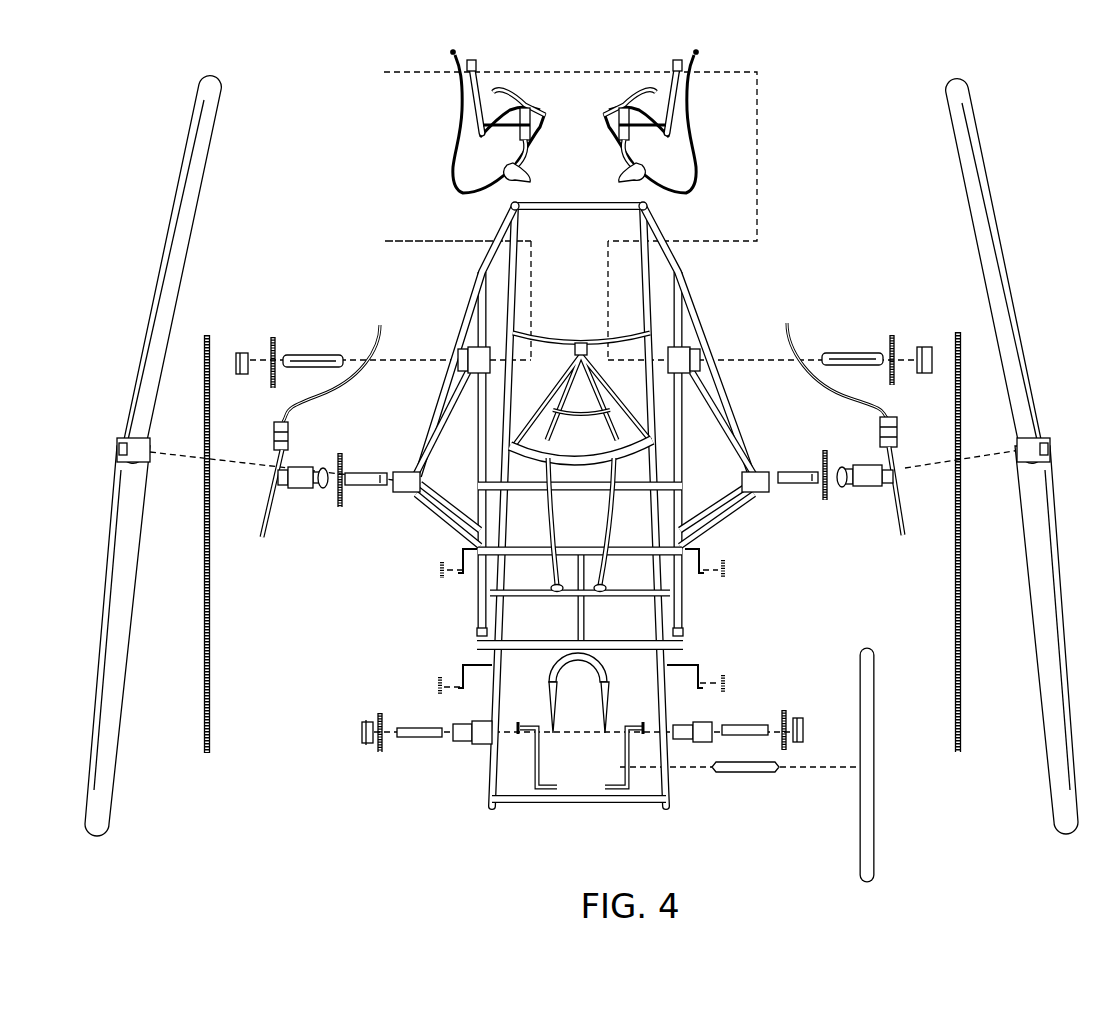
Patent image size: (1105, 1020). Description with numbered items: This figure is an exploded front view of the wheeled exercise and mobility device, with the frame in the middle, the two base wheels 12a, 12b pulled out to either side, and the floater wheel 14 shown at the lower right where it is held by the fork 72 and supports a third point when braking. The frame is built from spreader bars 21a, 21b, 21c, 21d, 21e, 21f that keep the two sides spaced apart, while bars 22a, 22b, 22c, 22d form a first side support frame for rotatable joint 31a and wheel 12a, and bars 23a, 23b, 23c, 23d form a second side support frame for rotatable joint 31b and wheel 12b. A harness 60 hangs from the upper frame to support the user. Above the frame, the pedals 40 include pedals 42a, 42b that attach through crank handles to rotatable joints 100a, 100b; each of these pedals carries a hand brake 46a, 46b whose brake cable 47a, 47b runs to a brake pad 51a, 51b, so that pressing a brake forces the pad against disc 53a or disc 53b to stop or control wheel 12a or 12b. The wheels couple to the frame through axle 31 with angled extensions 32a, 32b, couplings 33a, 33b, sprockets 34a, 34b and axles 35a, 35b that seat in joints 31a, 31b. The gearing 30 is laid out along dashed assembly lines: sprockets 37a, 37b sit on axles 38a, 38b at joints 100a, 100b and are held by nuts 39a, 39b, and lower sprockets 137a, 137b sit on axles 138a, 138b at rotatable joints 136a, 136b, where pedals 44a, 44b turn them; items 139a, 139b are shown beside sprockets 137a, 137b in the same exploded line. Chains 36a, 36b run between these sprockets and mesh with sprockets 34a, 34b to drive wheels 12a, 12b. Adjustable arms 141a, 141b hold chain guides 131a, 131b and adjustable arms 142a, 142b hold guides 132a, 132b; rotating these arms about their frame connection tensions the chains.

The first base wheel 12a is at (148, 338).
The additional base wheel 12b is at (1003, 252).
The floater wheel 14 is at (862, 797).
The spreader bar 21a is at (670, 594).
The spreader bar 21b is at (578, 491).
The spreader bar 21c is at (570, 201).
The spreader bar 21d is at (523, 804).
The spreader bar 21e is at (528, 547).
The spreader bar 21f is at (636, 651).
The first side support frame bar 22a is at (488, 251).
The first side support frame bar 22b is at (657, 221).
The first side support frame bar 22c is at (446, 502).
The first side support frame bar 22d is at (430, 511).
The second side support frame bar 23a is at (733, 403).
The second side support frame bar 23b is at (709, 416).
The second side support frame bar 23c is at (708, 506).
The second side support frame bar 23d is at (706, 530).
The gearing 30 is at (322, 283).
The axle 31 is at (318, 602).
The rotatable joint 31a is at (400, 471).
The rotatable joint 31b is at (755, 493).
The first angled extension 32a is at (297, 489).
The angled extension 32b is at (870, 487).
The coupling 33a is at (323, 468).
The coupling 33b is at (841, 467).
The sprocket 34a is at (339, 508).
The sprocket 34b is at (826, 501).
The axle 35a is at (352, 471).
The axle 35b is at (792, 470).
The chain 36a is at (210, 612).
The chain 36b is at (955, 570).
The sprocket 37a is at (273, 337).
The sprocket 37b is at (892, 336).
The axle 38a is at (320, 357).
The axle 38b is at (830, 355).
The nut 39a is at (240, 352).
The nut 39b is at (924, 347).
The pedals 40 is at (435, 93).
The pedal 42a is at (474, 72).
The pedal 42b is at (664, 110).
The pedal 44a is at (548, 786).
The pedal 44b is at (605, 790).
The brake 46a is at (498, 125).
The brake 46b is at (652, 128).
The brake cable 47a is at (457, 133).
The brake cable 47b is at (694, 160).
The brake pad 51a is at (275, 430).
The brake pad 51b is at (897, 432).
The disc 53a is at (265, 522).
The disc 53b is at (900, 517).
The harness 60 is at (595, 343).
The fork 72 is at (550, 697).
The rotatable joint 100a is at (463, 347).
The rotatable joint 100b is at (690, 340).
The chain guide 131a is at (440, 572).
The chain guide 131b is at (725, 569).
The guide 132a is at (440, 687).
The guide 132b is at (728, 682).
The rotatable joint 136a is at (477, 744).
The rotatable joint 136b is at (697, 742).
The sprocket 137a is at (381, 753).
The sprocket 137b is at (785, 751).
The axle 138a is at (427, 739).
The axle 138b is at (748, 736).
The left clip 139a is at (360, 731).
The right clip 139b is at (798, 743).
The adjustable arm 141a is at (462, 550).
The adjustable arm 141b is at (700, 551).
The adjustable arm 142a is at (463, 663).
The adjustable arm 142b is at (698, 663).